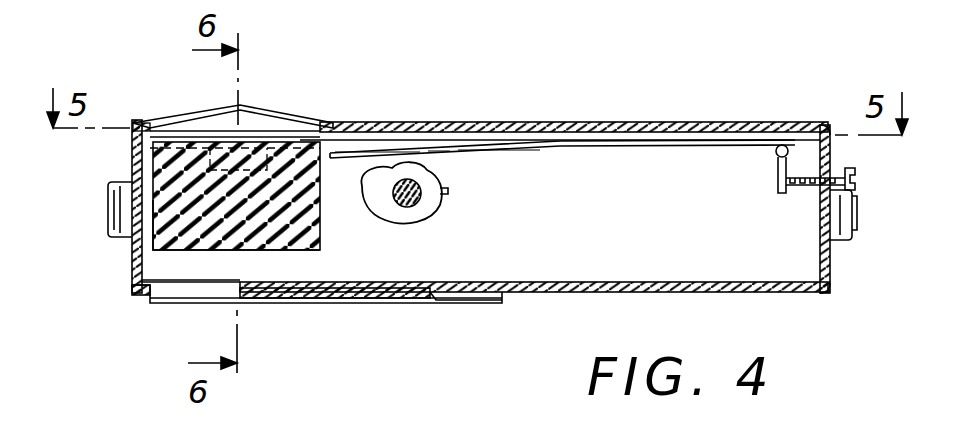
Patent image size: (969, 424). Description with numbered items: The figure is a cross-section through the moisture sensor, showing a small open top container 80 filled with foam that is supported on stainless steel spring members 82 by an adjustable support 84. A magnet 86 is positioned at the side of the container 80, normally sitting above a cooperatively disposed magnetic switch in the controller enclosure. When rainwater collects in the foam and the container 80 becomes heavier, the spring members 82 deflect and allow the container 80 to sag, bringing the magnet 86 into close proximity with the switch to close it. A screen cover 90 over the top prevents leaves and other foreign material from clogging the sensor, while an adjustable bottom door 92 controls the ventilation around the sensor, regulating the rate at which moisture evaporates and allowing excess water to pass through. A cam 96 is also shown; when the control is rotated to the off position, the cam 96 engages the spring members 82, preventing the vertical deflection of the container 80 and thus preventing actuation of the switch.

The open top container 80 is at (198, 232).
The spring members 82 is at (655, 147).
The adjustable support 84 is at (800, 162).
The magnet 86 is at (267, 160).
The screen cover 90 is at (267, 108).
The adjustable bottom door 92 is at (272, 296).
The cam 96 is at (383, 184).